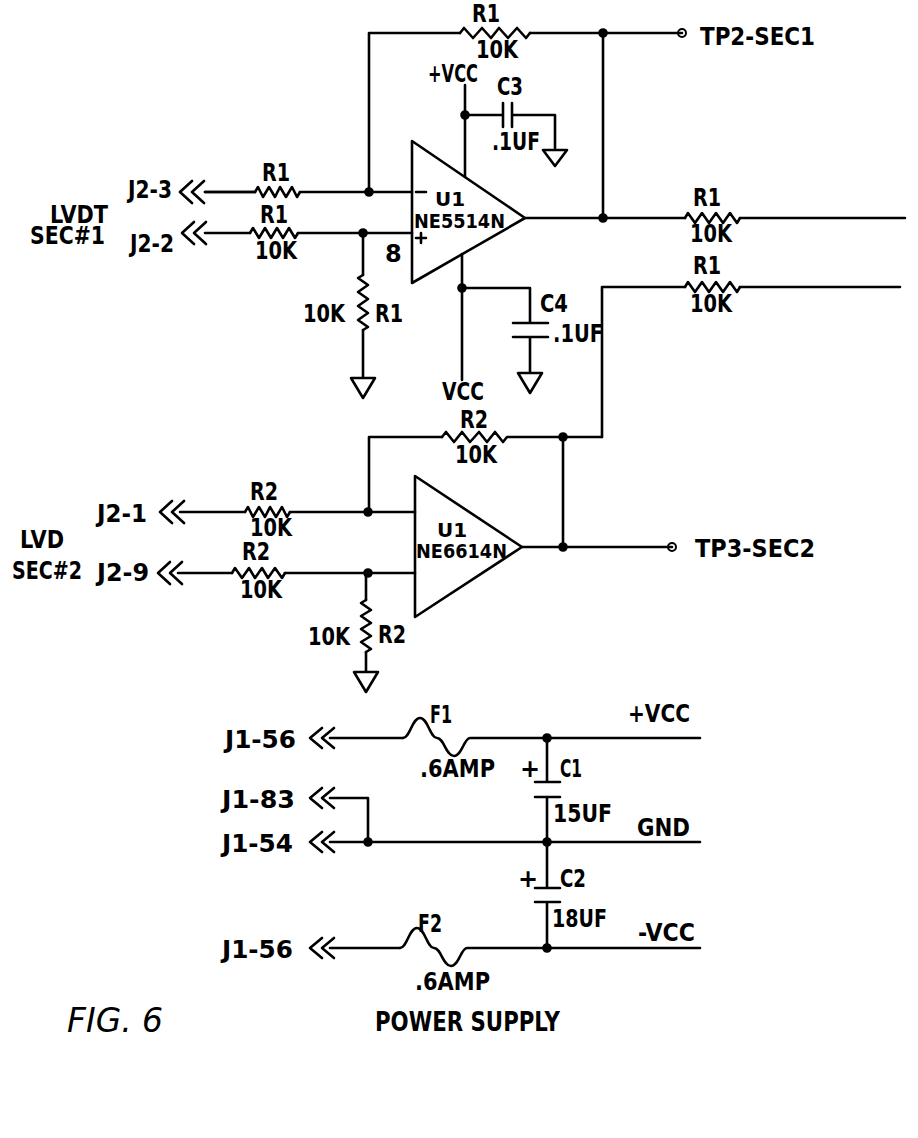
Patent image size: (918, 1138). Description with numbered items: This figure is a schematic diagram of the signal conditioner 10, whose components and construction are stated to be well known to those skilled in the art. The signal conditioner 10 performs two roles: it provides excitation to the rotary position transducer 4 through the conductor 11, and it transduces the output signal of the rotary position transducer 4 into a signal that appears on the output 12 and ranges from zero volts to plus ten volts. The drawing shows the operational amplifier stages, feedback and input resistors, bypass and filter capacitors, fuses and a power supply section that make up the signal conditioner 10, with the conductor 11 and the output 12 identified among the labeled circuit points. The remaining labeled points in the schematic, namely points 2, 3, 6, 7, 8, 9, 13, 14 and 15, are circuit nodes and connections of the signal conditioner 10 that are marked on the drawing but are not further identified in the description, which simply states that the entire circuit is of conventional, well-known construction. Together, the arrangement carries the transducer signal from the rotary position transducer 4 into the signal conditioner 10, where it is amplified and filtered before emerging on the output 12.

The feedback node net 2 is at (414, 96).
The inverting input net 3 is at (356, 178).
The rotary position transducer 4 is at (448, 158).
The net 6 is at (306, 586).
The output net 7 is at (554, 405).
The LVDT secondary 1 connector lines 8 is at (212, 190).
The LVDT secondary 2 connector lines 9 is at (198, 511).
The signal conditioner 10 is at (572, 387).
The conductor 11 is at (439, 413).
The output 12 is at (355, 406).
The net 13 is at (304, 196).
The net 14 is at (557, 192).
The net 15 is at (608, 109).